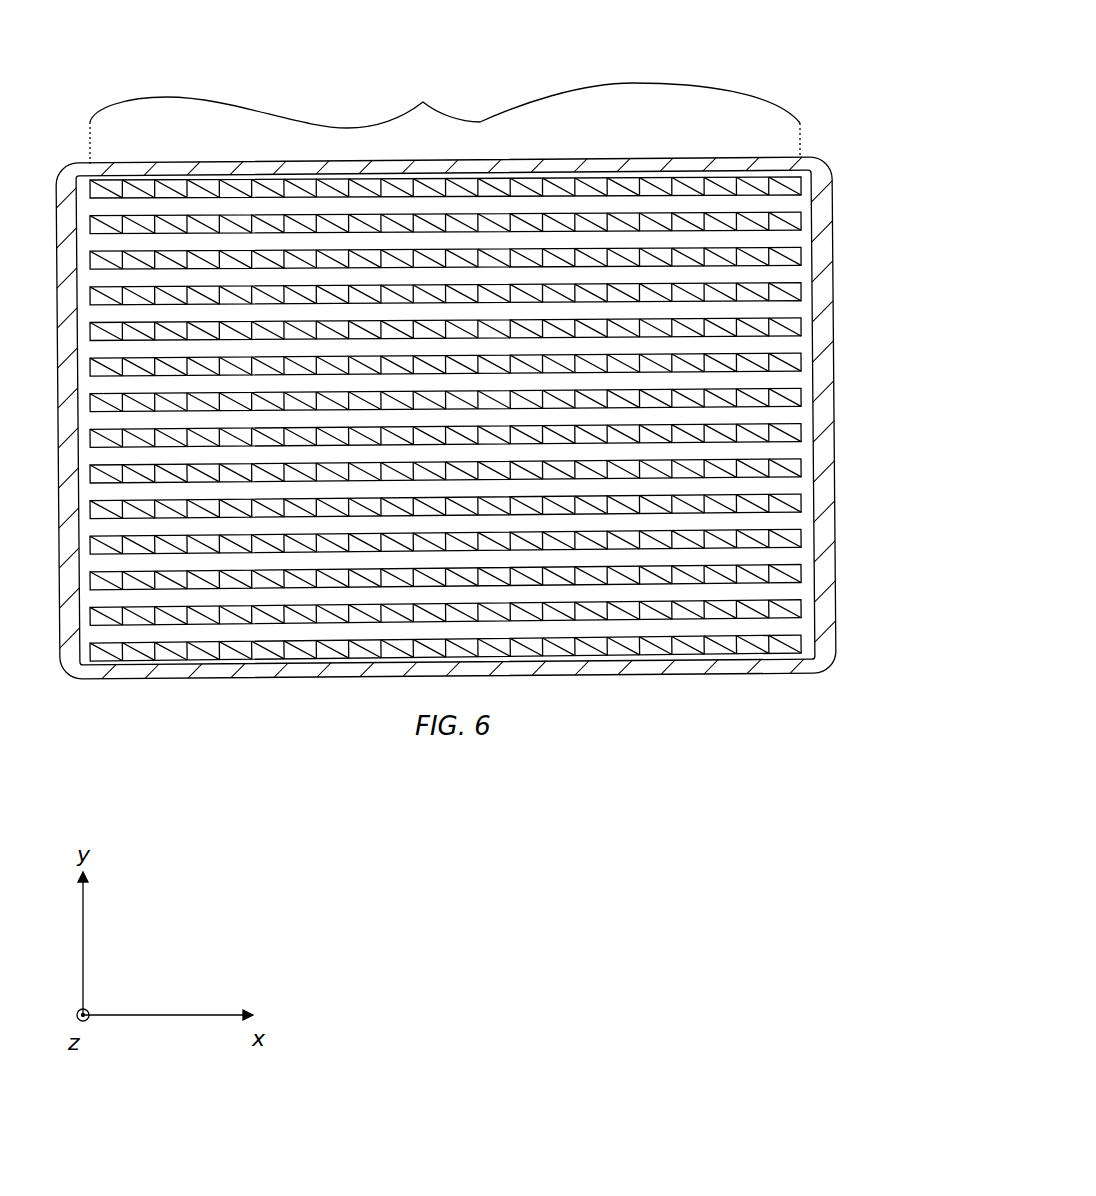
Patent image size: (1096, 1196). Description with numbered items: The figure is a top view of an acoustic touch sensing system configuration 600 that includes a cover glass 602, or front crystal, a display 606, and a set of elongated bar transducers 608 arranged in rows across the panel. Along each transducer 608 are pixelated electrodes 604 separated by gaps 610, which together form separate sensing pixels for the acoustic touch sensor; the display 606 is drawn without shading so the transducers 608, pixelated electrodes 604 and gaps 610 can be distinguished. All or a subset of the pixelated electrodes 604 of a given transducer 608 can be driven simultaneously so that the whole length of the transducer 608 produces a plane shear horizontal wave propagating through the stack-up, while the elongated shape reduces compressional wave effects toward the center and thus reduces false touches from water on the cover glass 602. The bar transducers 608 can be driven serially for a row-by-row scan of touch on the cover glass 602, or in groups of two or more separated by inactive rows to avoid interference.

The acoustic touch sensing system configuration 600 is at (769, 35).
The cover glass 602 is at (825, 203).
The pixelated electrodes 604 is at (80, 678).
The display 606 is at (812, 258).
The transducers 608 is at (445, 108).
The gaps 610 is at (125, 660).